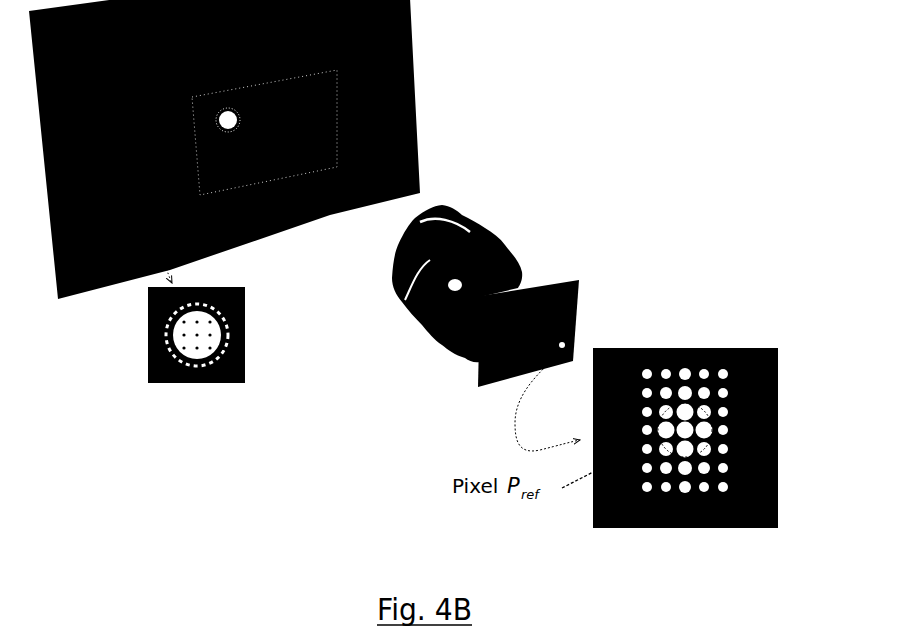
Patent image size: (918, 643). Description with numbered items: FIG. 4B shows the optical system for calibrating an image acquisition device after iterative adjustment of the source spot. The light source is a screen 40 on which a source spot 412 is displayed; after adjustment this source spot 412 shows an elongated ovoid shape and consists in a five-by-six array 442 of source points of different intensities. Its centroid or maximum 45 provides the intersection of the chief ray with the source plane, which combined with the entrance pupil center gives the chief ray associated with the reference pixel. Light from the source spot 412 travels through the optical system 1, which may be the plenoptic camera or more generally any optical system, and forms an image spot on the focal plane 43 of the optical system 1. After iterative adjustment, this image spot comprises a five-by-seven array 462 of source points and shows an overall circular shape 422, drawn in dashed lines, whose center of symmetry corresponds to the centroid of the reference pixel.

The screen 40 is at (412, 50).
The optical system 1 is at (482, 224).
The focal plane 43 is at (580, 288).
The 5×6 array of source points 442 is at (240, 382).
The source spot 412 is at (245, 312).
The centroid or maximum 45 is at (233, 352).
The 5×7 array of source points 462 is at (705, 450).
The image spot 422 is at (685, 450).